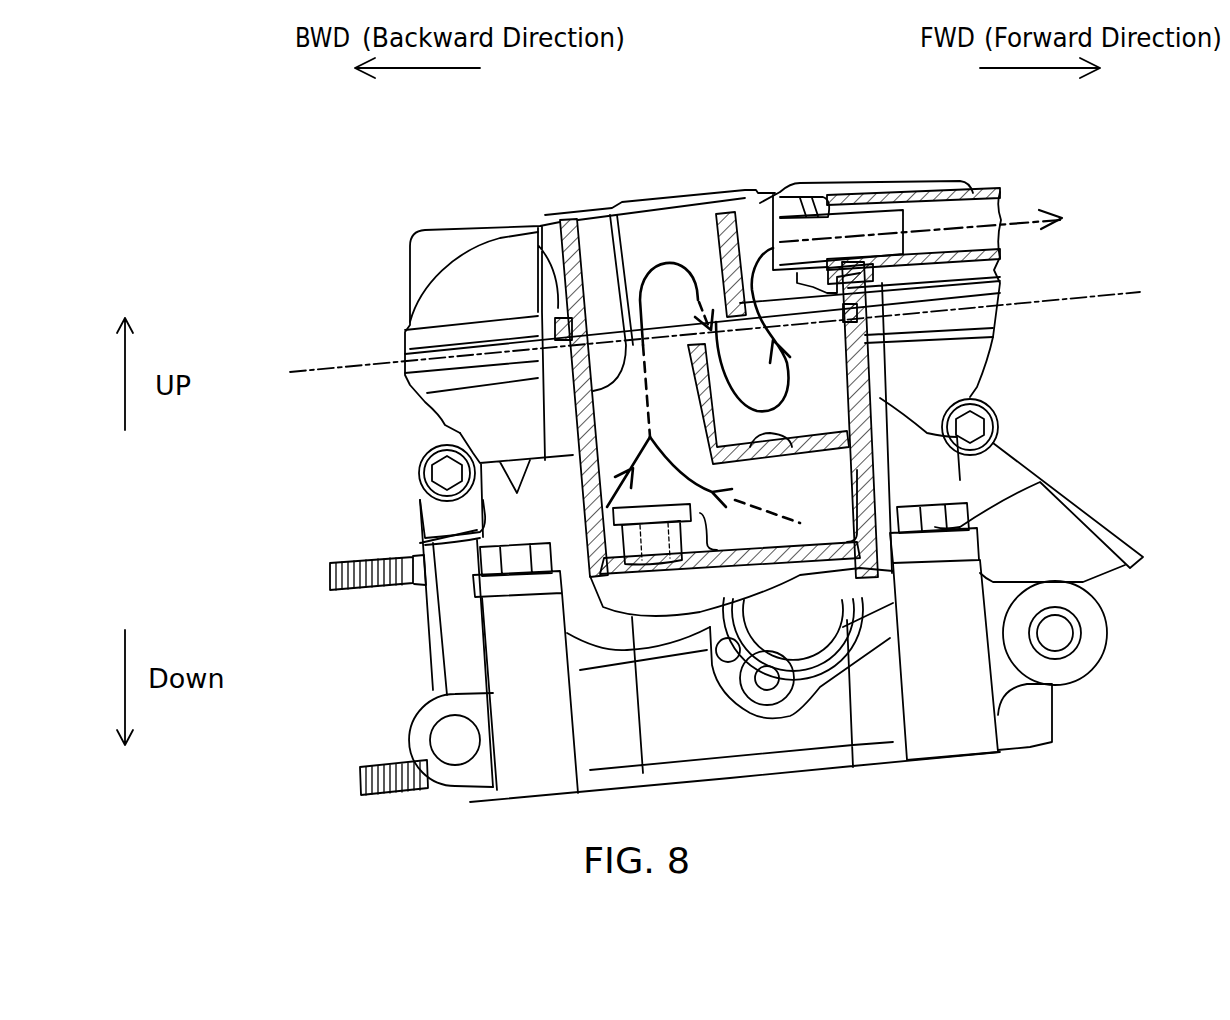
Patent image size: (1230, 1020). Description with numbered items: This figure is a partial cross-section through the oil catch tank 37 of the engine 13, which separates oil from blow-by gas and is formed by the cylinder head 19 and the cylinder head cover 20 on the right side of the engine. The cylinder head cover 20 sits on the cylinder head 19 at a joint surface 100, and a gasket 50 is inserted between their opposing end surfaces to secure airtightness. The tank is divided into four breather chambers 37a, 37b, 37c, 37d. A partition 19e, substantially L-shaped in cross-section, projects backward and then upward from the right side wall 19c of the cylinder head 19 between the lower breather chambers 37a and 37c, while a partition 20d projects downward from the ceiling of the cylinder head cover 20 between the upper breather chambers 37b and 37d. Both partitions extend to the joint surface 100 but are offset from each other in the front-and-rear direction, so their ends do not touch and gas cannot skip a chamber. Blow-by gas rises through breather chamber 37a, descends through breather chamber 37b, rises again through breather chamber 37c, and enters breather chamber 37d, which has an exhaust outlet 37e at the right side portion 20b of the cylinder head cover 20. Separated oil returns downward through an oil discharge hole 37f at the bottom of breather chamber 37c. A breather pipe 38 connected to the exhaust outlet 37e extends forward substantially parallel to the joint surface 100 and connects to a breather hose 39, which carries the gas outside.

The engine 13 is at (297, 193).
The cylinder head 19 is at (443, 422).
The right side wall of the cylinder head 19c is at (483, 470).
The partition 19e is at (985, 446).
The cylinder head cover 20 is at (465, 228).
The right side portion of the cylinder head cover 20b is at (541, 224).
The partition 20d is at (880, 298).
The oil catch tank 37 is at (800, 85).
The breather chamber 37a is at (611, 213).
The breather chamber 37b is at (663, 197).
The breather chamber 37c is at (722, 197).
The breather chamber 37d is at (775, 197).
The exhaust outlet 37e is at (817, 199).
The oil discharge hole 37f is at (790, 446).
The breather pipe 38 is at (854, 268).
The breather hose 39 is at (980, 186).
The gasket 50 is at (563, 330).
The joint surface 100 is at (323, 370).